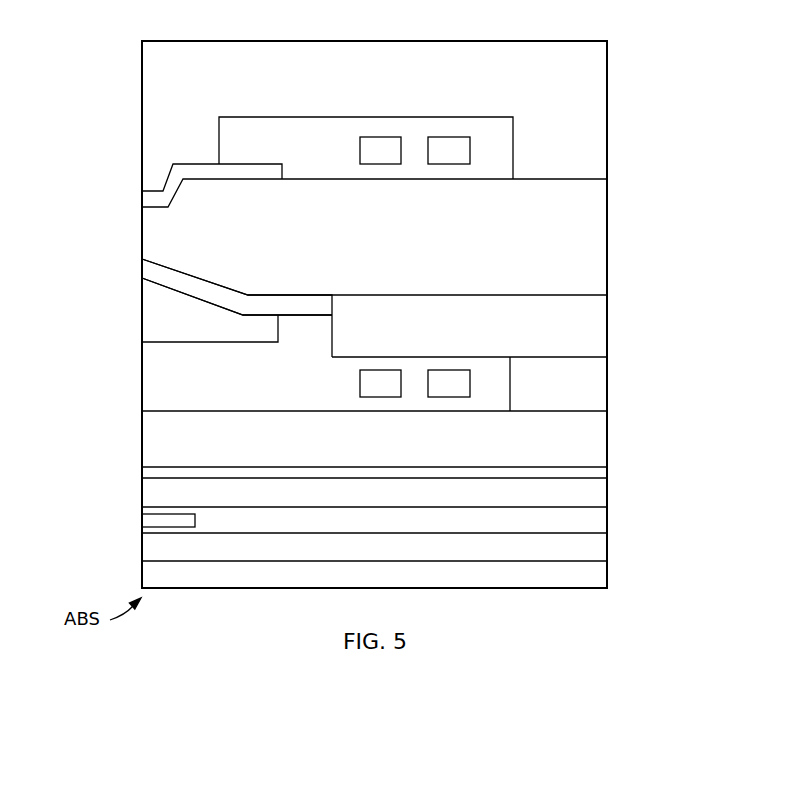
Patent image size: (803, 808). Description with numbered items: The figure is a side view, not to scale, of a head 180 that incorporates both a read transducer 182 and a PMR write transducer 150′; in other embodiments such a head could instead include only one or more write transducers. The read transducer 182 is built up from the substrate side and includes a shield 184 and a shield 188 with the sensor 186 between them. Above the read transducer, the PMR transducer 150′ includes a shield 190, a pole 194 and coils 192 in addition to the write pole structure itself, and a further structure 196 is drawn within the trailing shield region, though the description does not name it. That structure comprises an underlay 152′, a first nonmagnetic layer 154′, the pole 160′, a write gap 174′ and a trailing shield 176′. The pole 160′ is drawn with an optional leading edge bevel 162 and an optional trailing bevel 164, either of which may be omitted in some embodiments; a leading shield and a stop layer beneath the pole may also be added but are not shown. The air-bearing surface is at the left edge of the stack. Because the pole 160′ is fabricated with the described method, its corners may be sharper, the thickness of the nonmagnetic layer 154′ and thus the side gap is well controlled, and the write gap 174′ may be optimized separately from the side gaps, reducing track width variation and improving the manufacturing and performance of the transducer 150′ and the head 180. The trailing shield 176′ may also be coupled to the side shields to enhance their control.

The head 180 is at (394, 21).
The trailing shield 176′ is at (142, 103).
The shield internal structure / coils 196 is at (488, 146).
The trailing bevel 164 is at (150, 174).
The write gap 174′ is at (142, 200).
The leading edge bevel 162 is at (197, 296).
The pole 160′ is at (142, 240).
The first nonmagnetic layer 154′ is at (142, 268).
The underlay 152′ is at (190, 342).
The pole 194 is at (607, 318).
The PMR transducer 150′ is at (667, 254).
The coils 192 is at (495, 387).
The shield 190 is at (607, 457).
The shield 188 is at (142, 492).
The sensor 186 is at (142, 519).
The shield 184 is at (607, 550).
The read transducer 182 is at (695, 547).